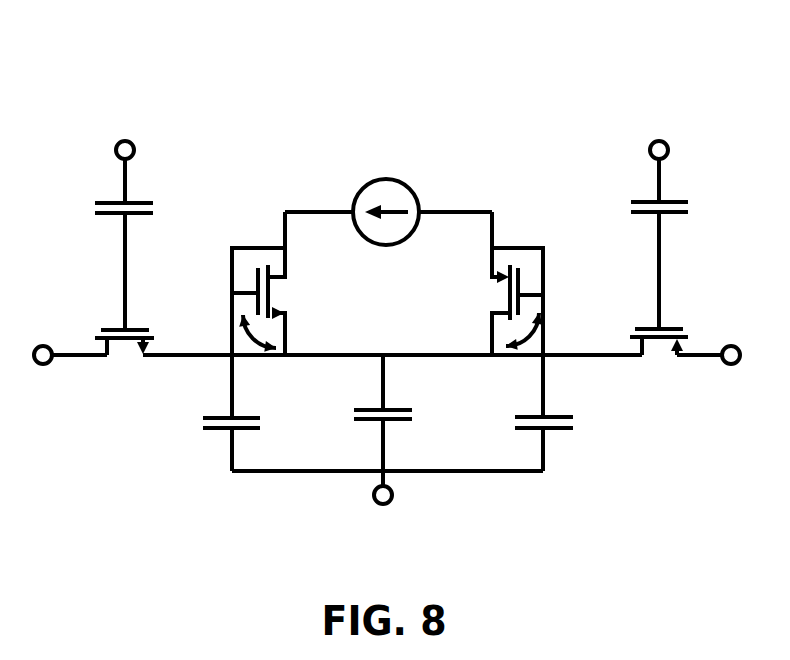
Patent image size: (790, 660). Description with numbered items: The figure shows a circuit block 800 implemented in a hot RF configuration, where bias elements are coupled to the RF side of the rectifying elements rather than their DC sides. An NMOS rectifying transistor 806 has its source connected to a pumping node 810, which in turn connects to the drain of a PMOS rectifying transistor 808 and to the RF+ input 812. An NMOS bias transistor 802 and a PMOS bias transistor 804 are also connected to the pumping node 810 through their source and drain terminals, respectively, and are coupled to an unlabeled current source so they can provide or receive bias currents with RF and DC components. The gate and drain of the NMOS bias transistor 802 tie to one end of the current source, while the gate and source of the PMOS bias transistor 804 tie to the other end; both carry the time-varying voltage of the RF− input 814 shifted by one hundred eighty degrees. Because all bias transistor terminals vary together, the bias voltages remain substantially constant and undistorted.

The circuit block 800 is at (93, 96).
The NMOS bias transistor 802 is at (290, 292).
The PMOS bias transistor 804 is at (487, 296).
The NMOS rectifying transistor 806 is at (122, 362).
The PMOS rectifying transistor 808 is at (665, 365).
The pumping node 810 is at (350, 368).
The RF+ input 812 is at (441, 501).
The RF− input 814 is at (181, 150).